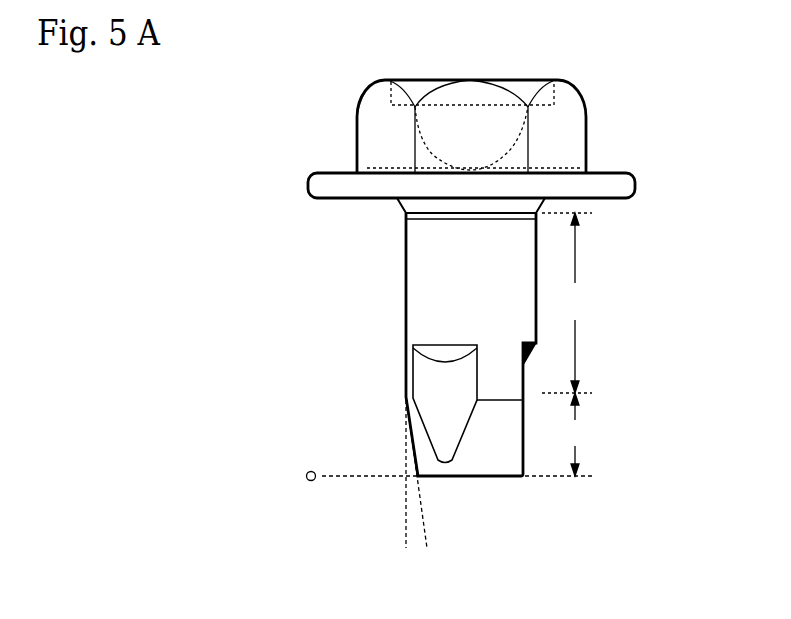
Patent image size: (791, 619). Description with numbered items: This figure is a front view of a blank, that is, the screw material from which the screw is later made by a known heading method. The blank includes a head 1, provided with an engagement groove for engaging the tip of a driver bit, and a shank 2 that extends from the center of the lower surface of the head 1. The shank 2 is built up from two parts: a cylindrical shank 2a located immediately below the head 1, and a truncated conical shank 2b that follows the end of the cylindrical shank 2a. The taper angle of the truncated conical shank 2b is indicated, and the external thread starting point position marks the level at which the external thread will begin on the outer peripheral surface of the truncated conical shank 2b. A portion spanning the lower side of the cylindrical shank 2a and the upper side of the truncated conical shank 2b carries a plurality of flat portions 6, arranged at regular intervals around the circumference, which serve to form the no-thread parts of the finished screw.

The head 1 is at (582, 108).
The shank 2 is at (628, 213).
The cylindrical shank 2a is at (567, 303).
The truncated conical shank 2b is at (451, 437).
The flat portion 6 is at (452, 432).